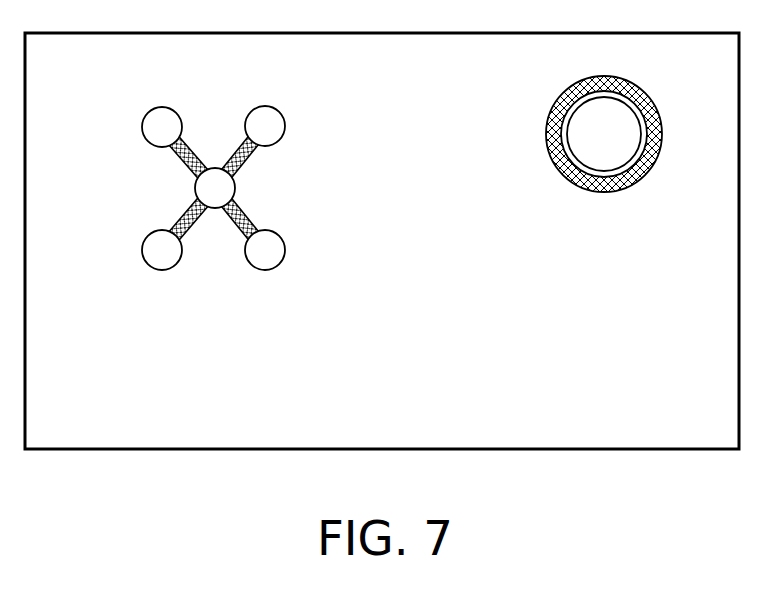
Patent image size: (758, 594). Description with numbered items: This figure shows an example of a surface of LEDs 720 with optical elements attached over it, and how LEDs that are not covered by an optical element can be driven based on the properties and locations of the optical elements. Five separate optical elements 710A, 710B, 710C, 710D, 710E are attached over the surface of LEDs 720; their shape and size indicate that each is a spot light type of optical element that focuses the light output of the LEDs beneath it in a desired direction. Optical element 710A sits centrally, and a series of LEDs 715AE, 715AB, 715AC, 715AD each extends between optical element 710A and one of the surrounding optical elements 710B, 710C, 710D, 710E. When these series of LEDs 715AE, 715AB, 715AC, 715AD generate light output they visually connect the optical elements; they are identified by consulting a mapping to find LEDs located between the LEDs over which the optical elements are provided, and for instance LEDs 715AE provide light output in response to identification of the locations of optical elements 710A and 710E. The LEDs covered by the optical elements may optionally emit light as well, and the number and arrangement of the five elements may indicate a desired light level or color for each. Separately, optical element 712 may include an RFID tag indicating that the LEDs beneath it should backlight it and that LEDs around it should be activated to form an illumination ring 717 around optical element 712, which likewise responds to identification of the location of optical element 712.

The optical element 710A is at (214, 168).
The optical element 710B is at (284, 117).
The optical element 710C is at (283, 258).
The optical element 710D is at (146, 258).
The optical element 710E is at (143, 118).
The series of LEDs 715AB is at (250, 161).
The series of LEDs 715AC is at (245, 215).
The series of LEDs 715AD is at (177, 217).
The series of LEDs 715AE is at (176, 158).
The optical element 712 is at (560, 138).
The illumination ring 717 is at (565, 175).
The surface of LEDs 720 is at (693, 417).